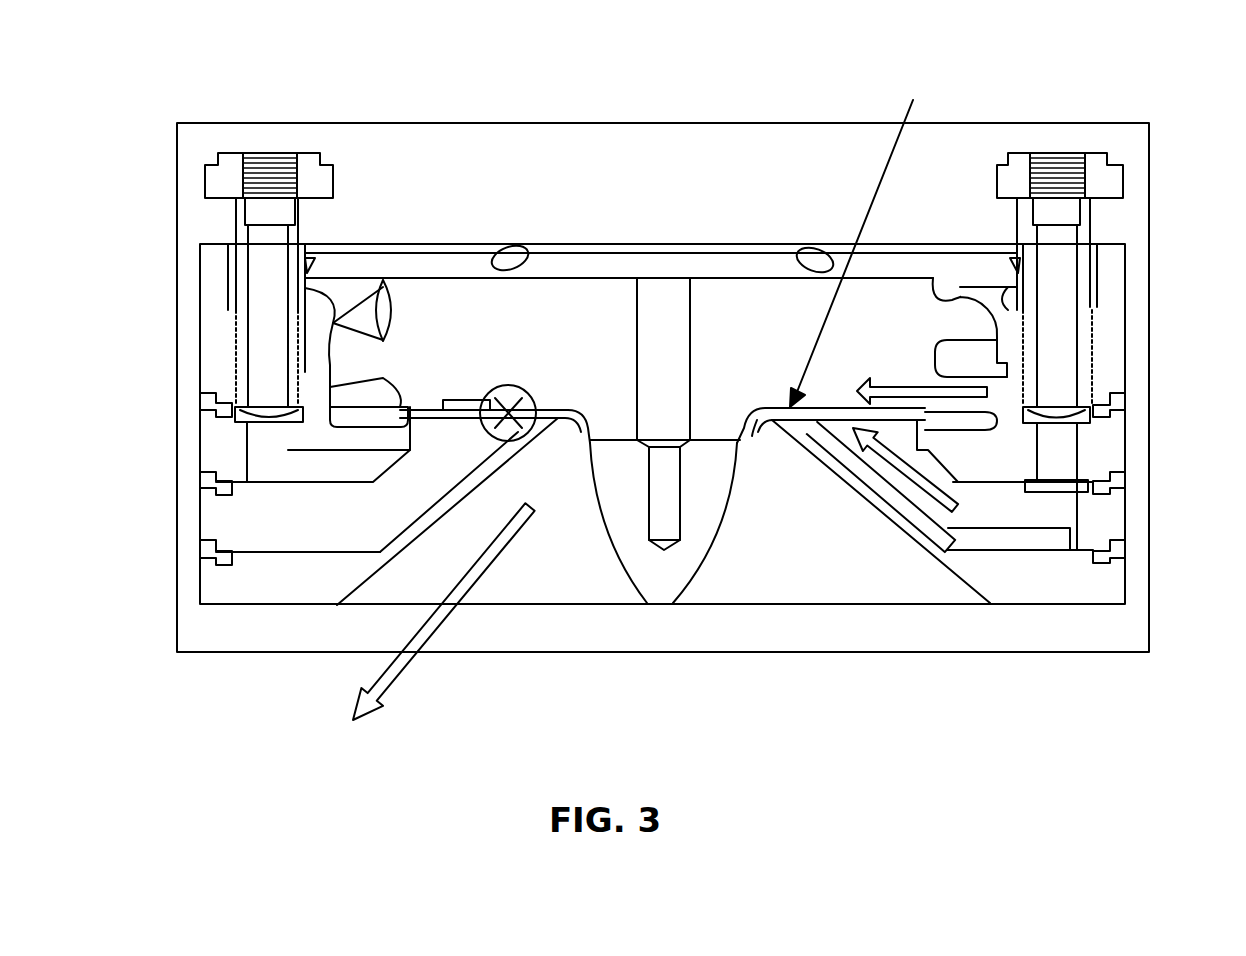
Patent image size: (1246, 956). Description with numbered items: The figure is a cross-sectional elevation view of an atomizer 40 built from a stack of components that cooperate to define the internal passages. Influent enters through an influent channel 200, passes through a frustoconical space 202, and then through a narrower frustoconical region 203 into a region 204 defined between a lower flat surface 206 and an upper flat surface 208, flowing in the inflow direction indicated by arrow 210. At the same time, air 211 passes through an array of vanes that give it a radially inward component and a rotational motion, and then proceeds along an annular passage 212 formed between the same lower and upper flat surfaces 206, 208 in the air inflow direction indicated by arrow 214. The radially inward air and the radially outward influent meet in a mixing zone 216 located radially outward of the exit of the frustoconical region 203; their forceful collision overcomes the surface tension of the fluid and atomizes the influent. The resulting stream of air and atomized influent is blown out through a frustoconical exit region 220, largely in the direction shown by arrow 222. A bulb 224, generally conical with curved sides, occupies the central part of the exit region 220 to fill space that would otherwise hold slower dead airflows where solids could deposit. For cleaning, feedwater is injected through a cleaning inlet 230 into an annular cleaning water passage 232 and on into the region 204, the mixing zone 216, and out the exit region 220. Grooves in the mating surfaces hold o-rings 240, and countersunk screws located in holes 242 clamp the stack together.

The atomizer 40 is at (133, 254).
The influent channel 200 is at (1060, 210).
The frustoconical space 202 is at (868, 478).
The frustoconical region 203 is at (772, 424).
The region 204 is at (865, 241).
The lower flat surface 206 is at (762, 426).
The upper flat surface 208 is at (770, 402).
The arrow 210 is at (943, 515).
The air 211 is at (364, 270).
The annular passage 212 is at (438, 398).
The arrow 214 is at (995, 387).
The mixing zone 216 is at (508, 390).
The frustoconical exit region 220 is at (553, 565).
The arrow 222 is at (407, 670).
The bulb 224 is at (645, 573).
The cleaning inlet 230 is at (268, 207).
The annular cleaning water passage 232 is at (312, 470).
The o-rings 240 is at (217, 410).
The holes 242 is at (810, 260).